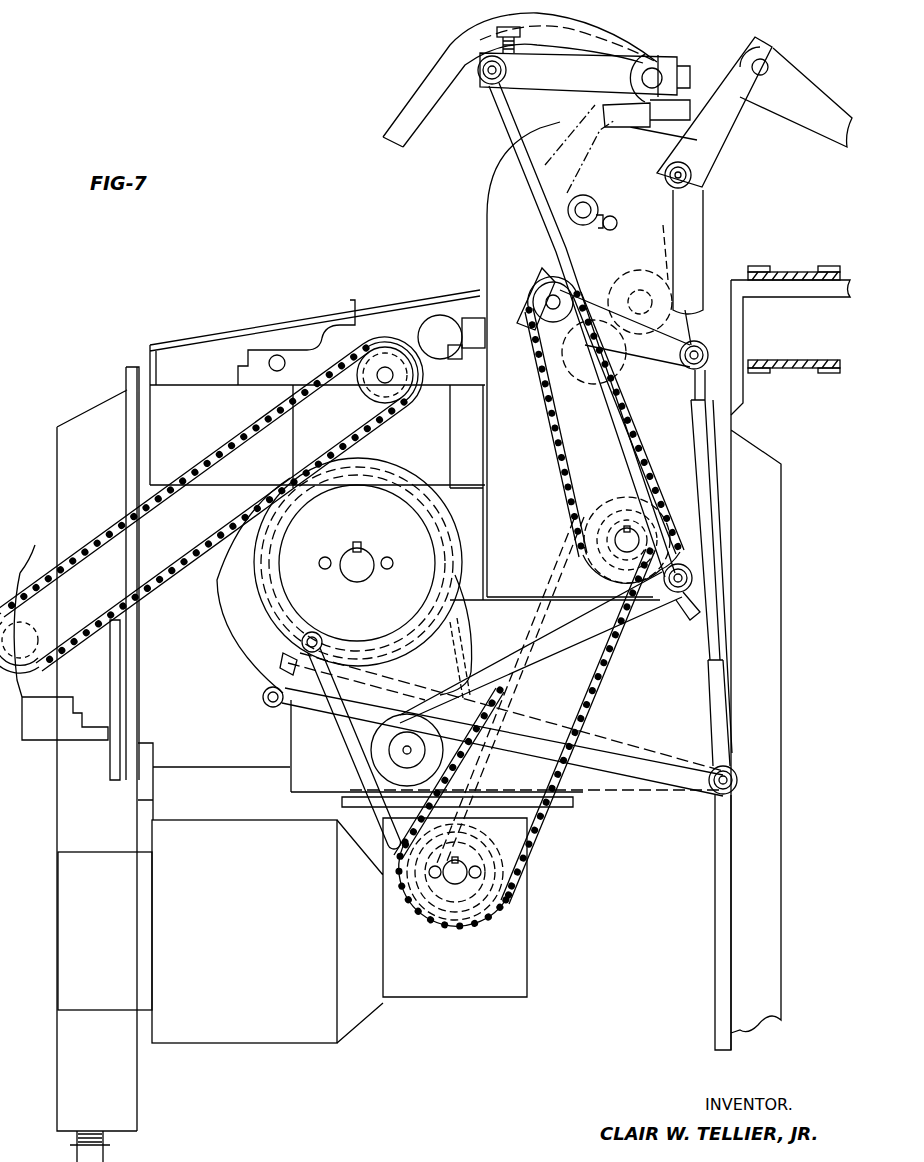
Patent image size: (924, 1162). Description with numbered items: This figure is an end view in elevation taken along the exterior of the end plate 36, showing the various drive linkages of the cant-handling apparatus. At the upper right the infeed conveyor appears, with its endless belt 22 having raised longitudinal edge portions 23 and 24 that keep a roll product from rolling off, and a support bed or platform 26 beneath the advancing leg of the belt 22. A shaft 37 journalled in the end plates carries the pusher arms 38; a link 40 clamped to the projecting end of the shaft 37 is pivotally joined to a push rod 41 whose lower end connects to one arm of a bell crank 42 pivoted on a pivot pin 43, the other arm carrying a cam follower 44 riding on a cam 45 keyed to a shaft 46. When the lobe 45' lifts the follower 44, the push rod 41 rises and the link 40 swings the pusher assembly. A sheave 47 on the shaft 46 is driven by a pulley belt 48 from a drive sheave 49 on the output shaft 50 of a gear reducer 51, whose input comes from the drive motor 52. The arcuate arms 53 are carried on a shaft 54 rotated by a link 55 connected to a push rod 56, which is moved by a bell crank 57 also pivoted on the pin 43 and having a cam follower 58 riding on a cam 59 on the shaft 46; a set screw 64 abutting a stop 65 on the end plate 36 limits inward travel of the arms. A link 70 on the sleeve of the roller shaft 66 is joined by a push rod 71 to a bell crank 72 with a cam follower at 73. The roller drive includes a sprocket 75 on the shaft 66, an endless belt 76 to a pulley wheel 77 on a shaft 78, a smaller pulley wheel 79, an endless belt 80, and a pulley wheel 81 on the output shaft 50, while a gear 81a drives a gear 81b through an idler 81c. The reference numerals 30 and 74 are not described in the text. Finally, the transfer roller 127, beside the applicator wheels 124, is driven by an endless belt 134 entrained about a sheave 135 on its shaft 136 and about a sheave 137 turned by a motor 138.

The endless belt 22 is at (790, 268).
The raised longitudinal edge portion 23 is at (843, 258).
The raised longitudinal edge portion 24 is at (765, 258).
The support bed or platform 26 is at (768, 295).
The top plate 30 is at (232, 332).
The end plate 36 is at (483, 258).
The rod or shaft 37 is at (770, 72).
The pusher arm 38 is at (805, 120).
The link 40 is at (712, 145).
The push rod 41 is at (705, 250).
The bell crank 42 is at (368, 690).
The pivot pin 43 is at (404, 752).
The cam follower 44 is at (320, 637).
The cam 45 is at (358, 562).
The cam lobe 45' is at (477, 636).
The shaft 46 is at (368, 556).
The pulley wheel or sheave 47 is at (392, 478).
The pulley belt 48 is at (385, 855).
The drive sheave 49 is at (495, 867).
The output shaft 50 is at (462, 882).
The gear reducer 51 is at (525, 965).
The drive motor 52 is at (290, 1045).
The arcuate arm 53 is at (465, 48).
The shaft 54 is at (652, 73).
The link 55 is at (525, 82).
The push rod 56 is at (560, 243).
The bell crank 57 is at (628, 622).
The cam follower 58 is at (262, 697).
The cam 59 is at (240, 648).
The set screw 64 is at (505, 27).
The stop 65 is at (590, 200).
The shaft 66 is at (550, 310).
The link 70 is at (635, 310).
The push rod 71 is at (712, 503).
The bell crank 72 is at (653, 765).
The cam follower 73 is at (278, 668).
The pulley rim 74 is at (262, 603).
The sheave or sprocket 75 is at (548, 290).
The endless belt 76 is at (552, 468).
The pulley wheel 77 is at (590, 528).
The shaft 78 is at (622, 540).
The pulley wheel 79 is at (620, 525).
The endless belt 80 is at (596, 694).
The pulley wheel 81 is at (518, 840).
The gear 81a is at (538, 386).
The gear 81b is at (672, 232).
The idler gear 81c is at (588, 385).
The applicator wheel 124 is at (440, 330).
The transfer roller 127 is at (372, 325).
The endless belt 134 is at (240, 432).
The sheave 135 is at (362, 382).
The shaft 136 is at (390, 380).
The pulley wheel or sheave 137 is at (48, 632).
The motor 138 is at (37, 575).